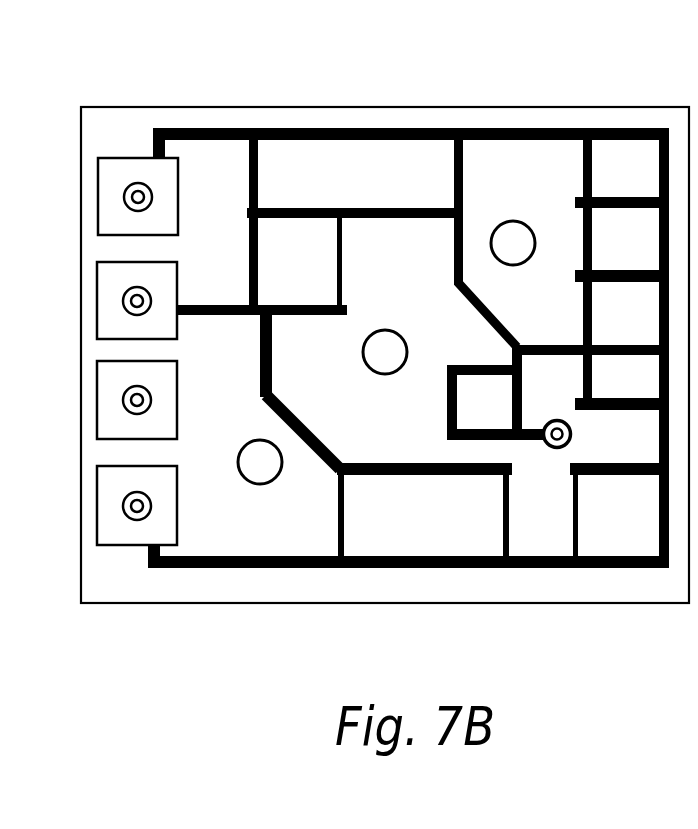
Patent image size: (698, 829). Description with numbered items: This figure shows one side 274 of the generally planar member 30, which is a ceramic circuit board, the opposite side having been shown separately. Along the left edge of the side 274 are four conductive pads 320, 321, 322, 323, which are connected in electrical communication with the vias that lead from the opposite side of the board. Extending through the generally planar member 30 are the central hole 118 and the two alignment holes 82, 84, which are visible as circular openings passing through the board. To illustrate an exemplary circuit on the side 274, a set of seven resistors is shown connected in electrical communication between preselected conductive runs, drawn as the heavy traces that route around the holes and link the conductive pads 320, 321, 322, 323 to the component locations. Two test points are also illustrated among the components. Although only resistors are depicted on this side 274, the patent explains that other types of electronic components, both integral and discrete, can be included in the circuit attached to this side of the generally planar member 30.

The generally planar member 30 is at (662, 59).
The side 274 is at (81, 98).
The conductive pad 320 is at (118, 177).
The conductive pad 321 is at (116, 278).
The conductive pad 322 is at (110, 375).
The conductive pad 323 is at (118, 482).
The alignment hole 84 is at (512, 221).
The central hole 118 is at (377, 332).
The alignment hole 82 is at (277, 481).